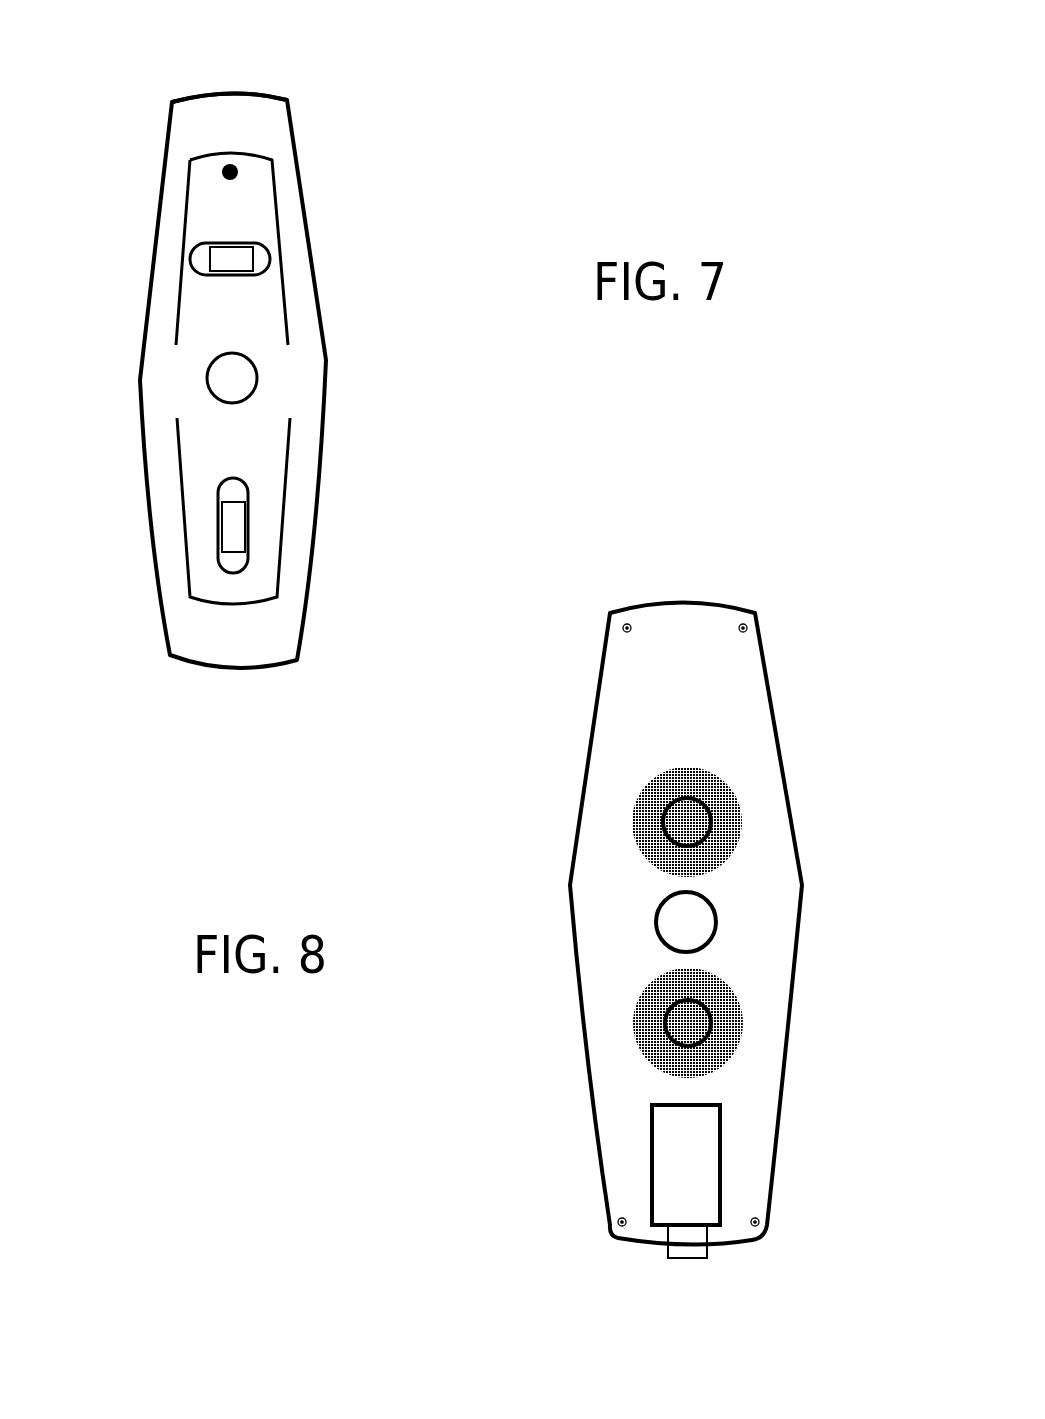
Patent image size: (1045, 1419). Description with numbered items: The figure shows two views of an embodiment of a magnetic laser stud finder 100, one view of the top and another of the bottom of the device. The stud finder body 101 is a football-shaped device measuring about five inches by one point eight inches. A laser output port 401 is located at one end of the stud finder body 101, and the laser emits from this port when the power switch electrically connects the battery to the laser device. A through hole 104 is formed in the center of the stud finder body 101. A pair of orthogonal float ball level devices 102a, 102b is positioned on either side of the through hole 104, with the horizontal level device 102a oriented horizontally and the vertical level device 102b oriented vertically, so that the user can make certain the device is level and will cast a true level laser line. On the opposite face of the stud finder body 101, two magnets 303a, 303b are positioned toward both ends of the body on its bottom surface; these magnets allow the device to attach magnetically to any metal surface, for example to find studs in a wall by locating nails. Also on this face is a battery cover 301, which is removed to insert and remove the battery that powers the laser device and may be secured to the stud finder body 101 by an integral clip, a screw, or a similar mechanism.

In FIG. 7, the stud finder 100 is at (230, 334).
In FIG. 8, the stud finder 100 is at (694, 928).
In FIG. 7, the stud finder body 101 is at (265, 379).
In FIG. 7, the laser output port 401 is at (260, 66).
In FIG. 8, the laser output port 401 is at (764, 1264).
In FIG. 7, the horizontal float ball level device 102a is at (295, 238).
In FIG. 7, the vertical float ball level device 102b is at (313, 525).
In FIG. 7, the through hole 104 is at (315, 353).
In FIG. 8, the through hole 104 is at (780, 861).
In FIG. 8, the first magnet 303a is at (613, 800).
In FIG. 8, the second magnet 303b is at (599, 1011).
In FIG. 8, the battery cover 301 is at (596, 1129).